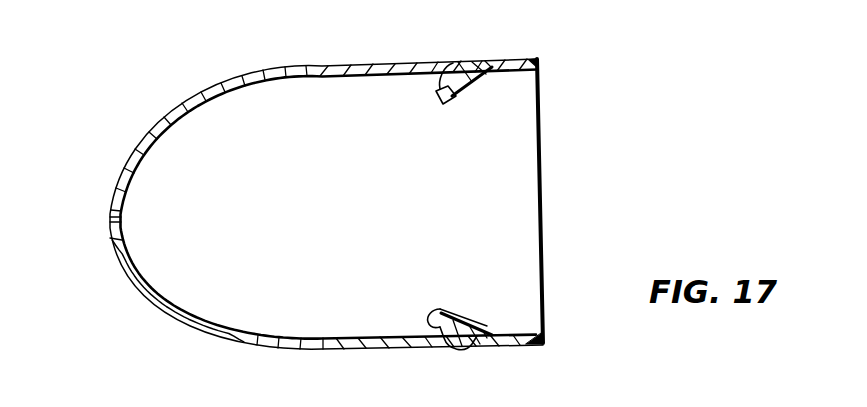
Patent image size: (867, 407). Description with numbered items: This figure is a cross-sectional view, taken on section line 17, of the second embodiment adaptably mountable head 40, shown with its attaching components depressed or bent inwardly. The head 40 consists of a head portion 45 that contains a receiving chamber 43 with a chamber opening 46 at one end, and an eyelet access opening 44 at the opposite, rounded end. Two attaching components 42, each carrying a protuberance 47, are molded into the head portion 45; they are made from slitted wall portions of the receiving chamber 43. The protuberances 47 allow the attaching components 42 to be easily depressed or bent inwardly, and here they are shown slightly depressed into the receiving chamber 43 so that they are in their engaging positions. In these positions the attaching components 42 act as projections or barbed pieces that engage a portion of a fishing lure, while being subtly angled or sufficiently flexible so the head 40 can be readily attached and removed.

The adaptably mountable head 40 is at (173, 81).
The attaching components 42 is at (455, 101).
The receiving chamber 43 is at (452, 195).
The eyelet access opening 44 is at (112, 238).
The head portion 45 is at (323, 66).
The chamber opening 46 is at (559, 163).
The protuberances 47 is at (458, 62).
The section line 17 is at (652, 0).